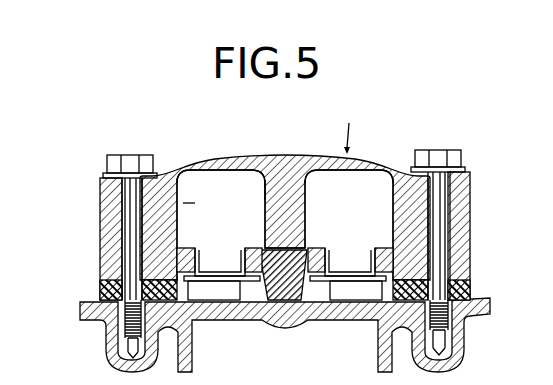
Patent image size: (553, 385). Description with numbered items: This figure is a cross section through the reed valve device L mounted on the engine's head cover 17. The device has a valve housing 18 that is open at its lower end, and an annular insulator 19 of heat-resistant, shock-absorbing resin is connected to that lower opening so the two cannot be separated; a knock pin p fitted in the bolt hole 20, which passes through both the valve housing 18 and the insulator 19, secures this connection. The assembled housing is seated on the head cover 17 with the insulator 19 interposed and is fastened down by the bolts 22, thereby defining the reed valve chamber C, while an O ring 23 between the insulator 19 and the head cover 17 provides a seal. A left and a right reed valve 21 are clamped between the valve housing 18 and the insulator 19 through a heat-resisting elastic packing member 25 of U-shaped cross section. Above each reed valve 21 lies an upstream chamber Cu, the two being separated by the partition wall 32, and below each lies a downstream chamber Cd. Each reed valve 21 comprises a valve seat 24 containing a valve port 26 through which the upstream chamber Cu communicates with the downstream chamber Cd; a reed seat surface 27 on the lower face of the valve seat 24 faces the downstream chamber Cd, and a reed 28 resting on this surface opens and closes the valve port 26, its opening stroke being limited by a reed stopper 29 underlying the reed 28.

The head cover 17 is at (487, 310).
The valve housing 18 is at (268, 157).
The insulator 19 is at (466, 284).
The bolt hole 20 is at (124, 204).
The reed valve 21 is at (220, 255).
The bolt 22 is at (130, 156).
The O ring 23 is at (135, 323).
The valve seat 24 is at (285, 214).
The heat-resisting elastic packing member 25 is at (285, 229).
The valve port 26 is at (197, 260).
The reed seat surface 27 is at (267, 245).
The reed 28 is at (287, 320).
The reed stopper 29 is at (214, 302).
The partition wall 32 is at (268, 190).
The reed valve chamber C is at (216, 176).
The upstream chamber Cu is at (283, 190).
The downstream chamber Cd is at (240, 302).
The reed valve device L is at (350, 125).
The knock pin p is at (108, 245).